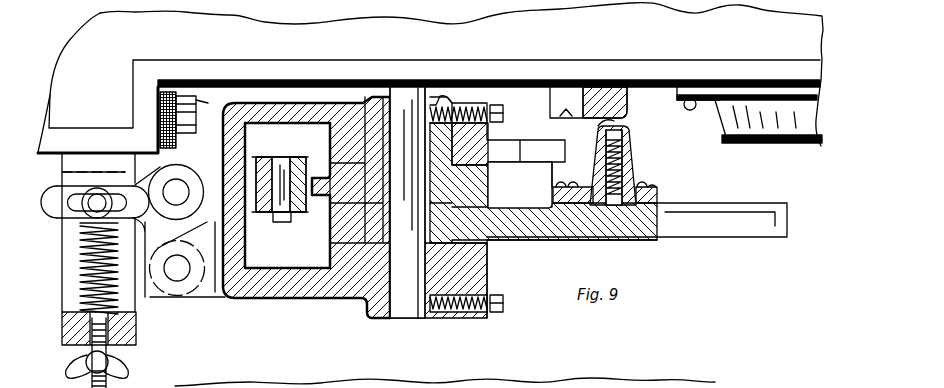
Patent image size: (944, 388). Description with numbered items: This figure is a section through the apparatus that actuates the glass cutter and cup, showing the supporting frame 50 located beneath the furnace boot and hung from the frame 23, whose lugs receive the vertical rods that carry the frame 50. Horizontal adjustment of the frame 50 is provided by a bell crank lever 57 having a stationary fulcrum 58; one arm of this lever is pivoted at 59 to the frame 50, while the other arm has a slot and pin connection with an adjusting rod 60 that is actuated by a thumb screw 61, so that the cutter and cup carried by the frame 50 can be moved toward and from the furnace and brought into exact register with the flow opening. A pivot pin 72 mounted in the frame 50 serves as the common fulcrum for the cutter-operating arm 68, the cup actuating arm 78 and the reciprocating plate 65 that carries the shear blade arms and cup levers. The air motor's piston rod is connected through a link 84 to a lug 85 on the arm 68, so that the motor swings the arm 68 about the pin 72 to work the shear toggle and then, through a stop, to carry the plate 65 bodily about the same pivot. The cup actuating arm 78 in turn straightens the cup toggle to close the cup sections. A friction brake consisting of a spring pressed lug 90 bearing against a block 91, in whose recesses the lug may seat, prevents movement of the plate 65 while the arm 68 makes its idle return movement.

The frame 23 is at (430, 78).
The supporting frame 50 is at (297, 110).
The bell crank lever 57 is at (143, 280).
The stationary fulcrum 58 is at (177, 192).
The pivot 59 is at (184, 280).
The adjusting rod 60 is at (82, 276).
The thumb screw 61 is at (127, 366).
The reciprocating plate 65 is at (563, 230).
The cutter-operating arm 68 is at (474, 188).
The pivot pin 72 is at (401, 320).
The cup actuating arm 78 is at (505, 152).
The link 84 is at (316, 165).
The lug 85 is at (320, 192).
The spring pressed lug 90 is at (612, 131).
The block 91 is at (632, 102).